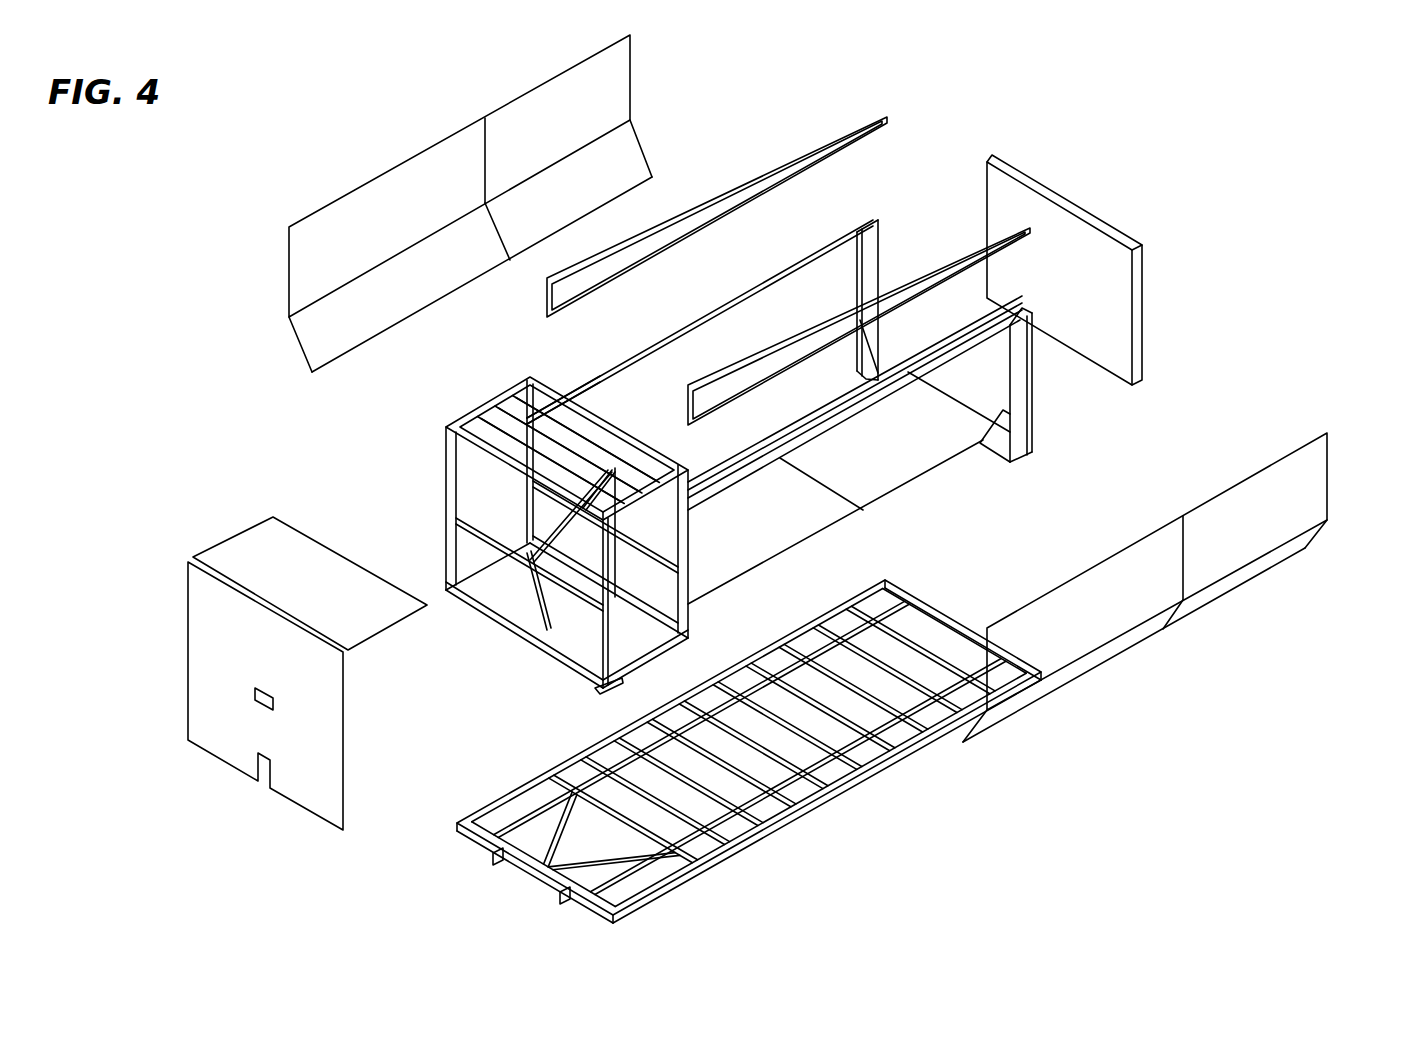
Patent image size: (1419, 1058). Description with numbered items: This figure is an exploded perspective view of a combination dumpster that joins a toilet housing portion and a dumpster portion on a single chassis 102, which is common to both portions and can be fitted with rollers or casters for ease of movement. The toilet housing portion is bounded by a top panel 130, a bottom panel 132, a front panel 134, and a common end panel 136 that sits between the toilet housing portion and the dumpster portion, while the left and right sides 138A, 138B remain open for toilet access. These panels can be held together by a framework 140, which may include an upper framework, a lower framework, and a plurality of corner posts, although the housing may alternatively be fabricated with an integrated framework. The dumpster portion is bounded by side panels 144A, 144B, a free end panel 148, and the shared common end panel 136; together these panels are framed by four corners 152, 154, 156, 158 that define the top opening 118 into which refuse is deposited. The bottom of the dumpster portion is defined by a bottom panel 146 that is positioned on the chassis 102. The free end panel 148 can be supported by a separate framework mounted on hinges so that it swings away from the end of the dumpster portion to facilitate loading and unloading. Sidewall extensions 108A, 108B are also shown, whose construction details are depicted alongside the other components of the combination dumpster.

The chassis 102 is at (733, 815).
The sidewall extension 108A is at (747, 367).
The sidewall extension 108B is at (583, 267).
The top opening 118 is at (850, 232).
The top panel 130 is at (282, 548).
The bottom panel 132 is at (620, 655).
The front panel 134 is at (212, 682).
The common end panel 136 is at (648, 523).
The left side 138A is at (648, 592).
The right side 138B is at (475, 497).
The framework 140 is at (560, 536).
The side panel 144A is at (1280, 495).
The side panel 144B is at (607, 85).
The bottom panel 146 is at (1112, 296).
The free end panel 148 is at (873, 445).
The corner 152 is at (683, 492).
The corner 154 is at (1028, 305).
The corner 156 is at (878, 222).
The corner 158 is at (568, 390).